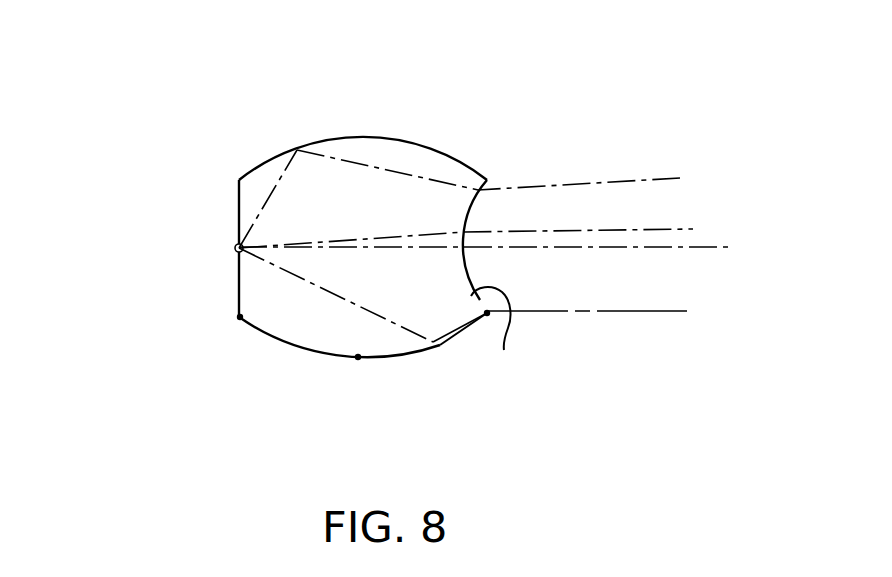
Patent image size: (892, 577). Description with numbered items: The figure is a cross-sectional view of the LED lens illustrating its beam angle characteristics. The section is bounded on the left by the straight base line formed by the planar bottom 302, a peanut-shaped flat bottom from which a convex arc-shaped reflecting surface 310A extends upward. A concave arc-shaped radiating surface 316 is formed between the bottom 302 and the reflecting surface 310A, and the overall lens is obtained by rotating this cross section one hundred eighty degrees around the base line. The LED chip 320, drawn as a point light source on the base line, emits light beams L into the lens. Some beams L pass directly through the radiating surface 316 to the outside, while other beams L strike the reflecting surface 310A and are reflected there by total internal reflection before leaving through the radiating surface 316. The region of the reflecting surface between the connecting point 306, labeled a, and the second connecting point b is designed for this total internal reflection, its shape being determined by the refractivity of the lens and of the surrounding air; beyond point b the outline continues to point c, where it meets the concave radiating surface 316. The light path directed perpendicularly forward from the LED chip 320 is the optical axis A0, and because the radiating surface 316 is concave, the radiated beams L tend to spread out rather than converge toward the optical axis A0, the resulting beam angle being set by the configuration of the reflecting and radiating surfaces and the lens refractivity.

The reflecting surface 310A is at (370, 142).
The planar bottom 302 is at (239, 213).
The LED chip 320 is at (235, 250).
The connecting point 306 is at (240, 317).
The second connecting point b is at (358, 357).
The connecting point c is at (488, 313).
The radiating surface 316 is at (504, 350).
The light beam L is at (608, 311).
The optical axis A0 is at (708, 247).